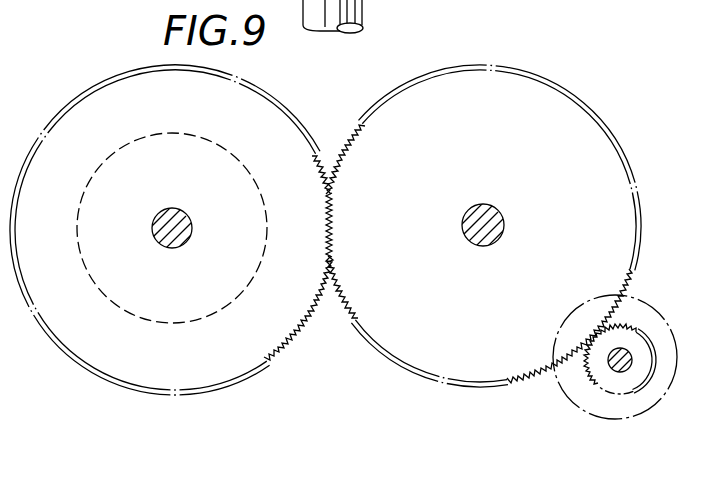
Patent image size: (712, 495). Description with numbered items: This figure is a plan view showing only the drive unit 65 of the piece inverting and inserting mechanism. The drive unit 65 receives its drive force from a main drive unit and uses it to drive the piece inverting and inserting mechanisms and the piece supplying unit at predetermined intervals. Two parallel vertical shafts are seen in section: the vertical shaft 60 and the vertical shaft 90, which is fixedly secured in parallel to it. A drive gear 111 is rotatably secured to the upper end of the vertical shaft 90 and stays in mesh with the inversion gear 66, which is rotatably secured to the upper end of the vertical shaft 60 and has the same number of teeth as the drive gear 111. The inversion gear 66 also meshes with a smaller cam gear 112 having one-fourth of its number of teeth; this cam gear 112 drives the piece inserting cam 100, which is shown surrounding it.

The drive gear 111 is at (227, 92).
The vertical shaft 90 is at (192, 223).
The drive unit 65 is at (200, 322).
The inversion gear 66 is at (483, 213).
The vertical shaft 60 is at (463, 227).
The cam gear 112 is at (640, 328).
The piece inserting cam 100 is at (637, 403).